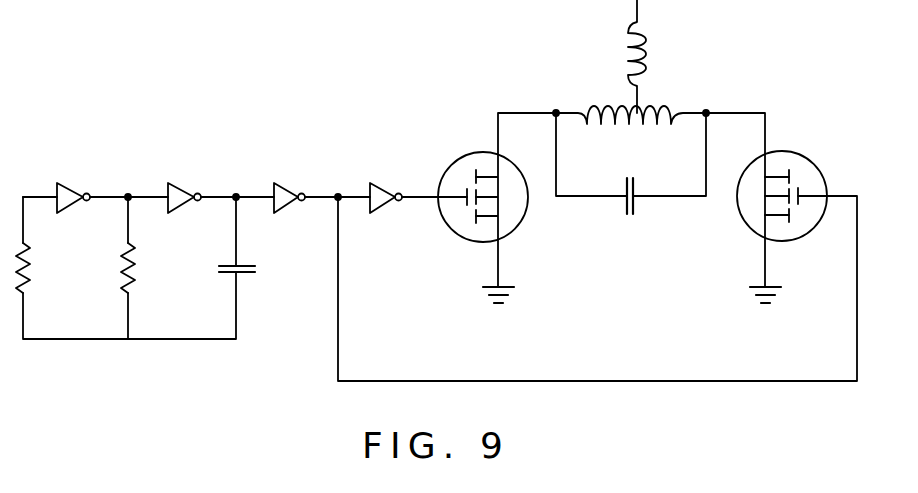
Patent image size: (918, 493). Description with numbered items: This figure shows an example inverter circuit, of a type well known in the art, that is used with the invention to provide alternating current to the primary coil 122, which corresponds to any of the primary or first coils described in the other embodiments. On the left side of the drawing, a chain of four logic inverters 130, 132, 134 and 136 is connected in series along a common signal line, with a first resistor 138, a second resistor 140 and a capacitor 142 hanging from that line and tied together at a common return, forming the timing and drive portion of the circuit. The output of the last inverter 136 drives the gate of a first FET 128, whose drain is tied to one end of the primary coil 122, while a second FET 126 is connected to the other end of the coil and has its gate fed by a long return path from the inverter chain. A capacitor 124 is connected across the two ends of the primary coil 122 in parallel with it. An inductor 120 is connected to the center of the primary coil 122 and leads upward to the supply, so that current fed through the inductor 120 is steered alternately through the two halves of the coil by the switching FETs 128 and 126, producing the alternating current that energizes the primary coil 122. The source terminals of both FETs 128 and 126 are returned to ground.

The inductor 120 is at (640, 40).
The primary coil 122 is at (647, 107).
The capacitor 124 is at (635, 207).
The FET 126 is at (812, 157).
The FET 128 is at (453, 162).
The inverter 130 is at (70, 196).
The inverter 132 is at (182, 196).
The inverter 134 is at (287, 191).
The inverter 136 is at (382, 186).
The resistor 138 is at (27, 257).
The resistor 140 is at (132, 257).
The capacitor 142 is at (245, 273).